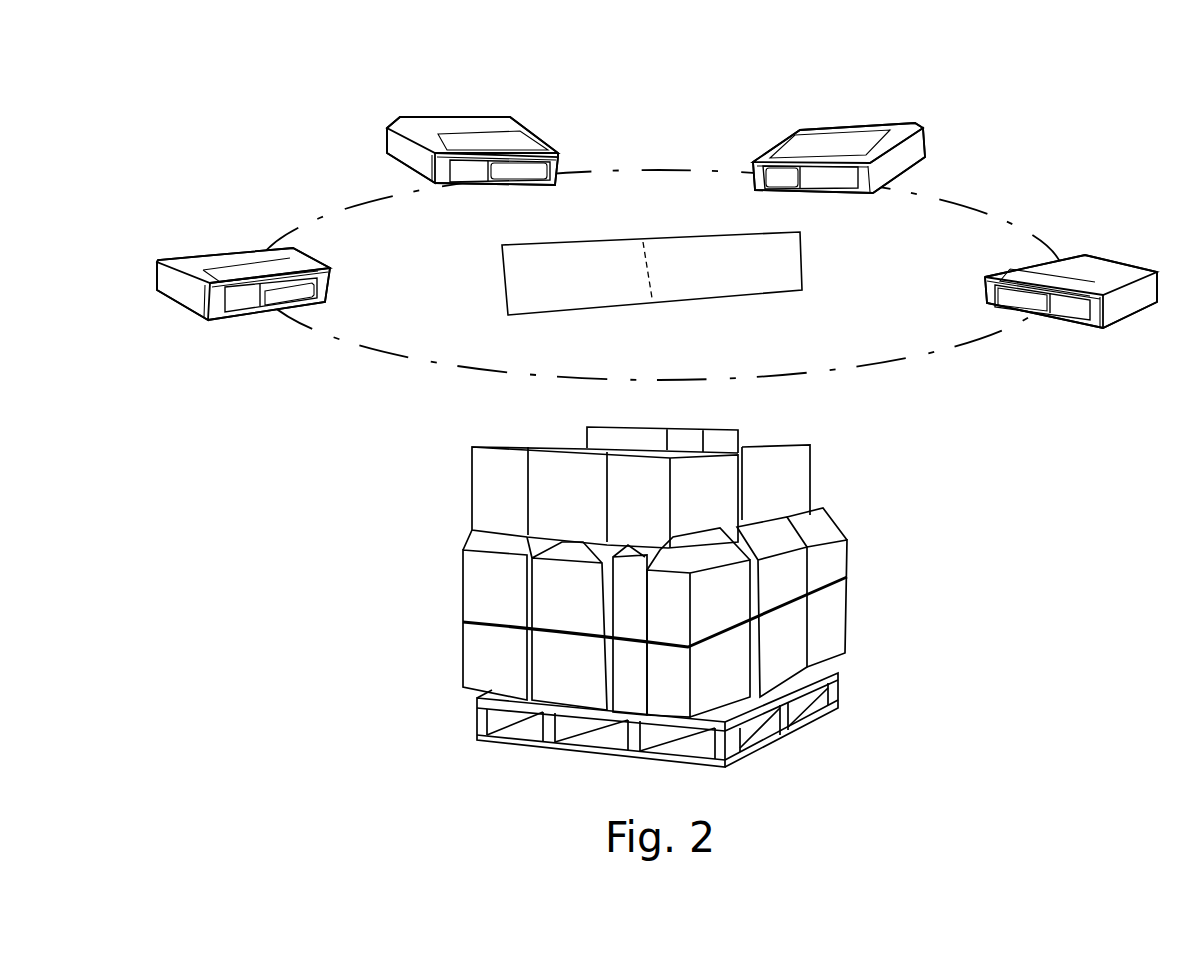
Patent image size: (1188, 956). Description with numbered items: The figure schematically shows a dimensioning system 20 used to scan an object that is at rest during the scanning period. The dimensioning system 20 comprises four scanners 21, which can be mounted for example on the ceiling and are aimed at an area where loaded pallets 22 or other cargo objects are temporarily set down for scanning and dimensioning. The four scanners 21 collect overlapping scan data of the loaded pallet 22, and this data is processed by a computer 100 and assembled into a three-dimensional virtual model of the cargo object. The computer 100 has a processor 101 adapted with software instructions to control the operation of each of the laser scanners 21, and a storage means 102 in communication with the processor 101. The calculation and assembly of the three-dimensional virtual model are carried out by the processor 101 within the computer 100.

The dimensioning system 20 is at (1067, 152).
The scanner 21 is at (450, 118).
The loaded pallet 22 is at (810, 562).
The computer 100 is at (701, 290).
The processor 101 is at (587, 300).
The storage means 102 is at (680, 295).